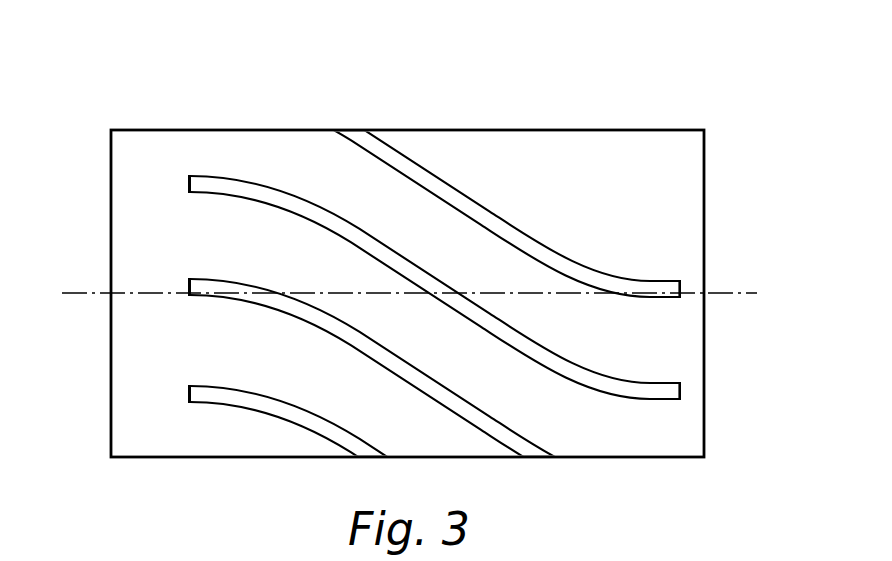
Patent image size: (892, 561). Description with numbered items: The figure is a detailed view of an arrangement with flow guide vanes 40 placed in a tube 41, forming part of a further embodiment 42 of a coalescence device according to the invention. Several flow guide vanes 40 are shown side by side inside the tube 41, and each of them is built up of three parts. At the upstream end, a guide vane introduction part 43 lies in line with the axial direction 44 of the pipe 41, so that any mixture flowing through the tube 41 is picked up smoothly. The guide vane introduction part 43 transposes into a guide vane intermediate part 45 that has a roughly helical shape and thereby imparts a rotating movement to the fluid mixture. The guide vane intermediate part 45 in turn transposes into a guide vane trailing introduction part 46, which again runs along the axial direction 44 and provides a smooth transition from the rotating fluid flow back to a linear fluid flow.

The flow guide vane 40 is at (406, 321).
The tube 41 is at (657, 130).
The further embodiment of coalescence device 42 is at (87, 95).
The guide vane introduction part 43 is at (189, 183).
The axial direction 44 is at (746, 290).
The guide vane intermediate part 45 is at (397, 174).
The guide vane trailing introduction part 46 is at (657, 287).